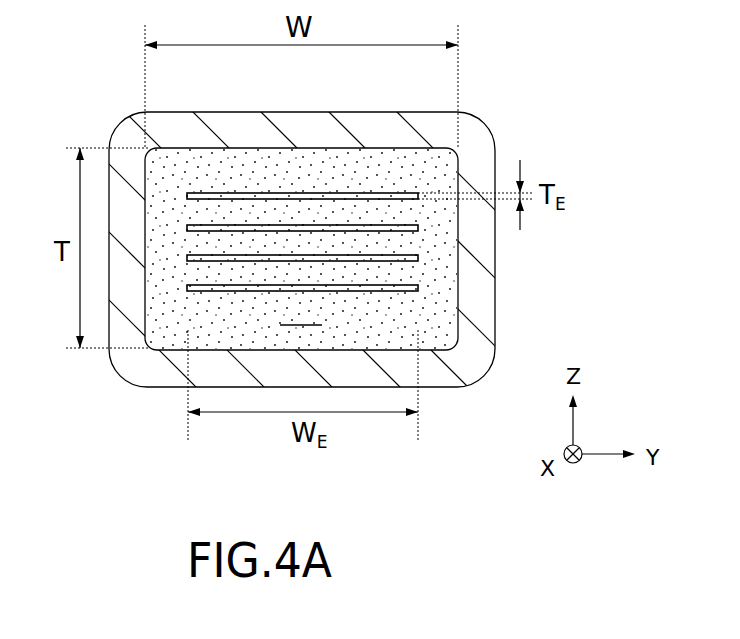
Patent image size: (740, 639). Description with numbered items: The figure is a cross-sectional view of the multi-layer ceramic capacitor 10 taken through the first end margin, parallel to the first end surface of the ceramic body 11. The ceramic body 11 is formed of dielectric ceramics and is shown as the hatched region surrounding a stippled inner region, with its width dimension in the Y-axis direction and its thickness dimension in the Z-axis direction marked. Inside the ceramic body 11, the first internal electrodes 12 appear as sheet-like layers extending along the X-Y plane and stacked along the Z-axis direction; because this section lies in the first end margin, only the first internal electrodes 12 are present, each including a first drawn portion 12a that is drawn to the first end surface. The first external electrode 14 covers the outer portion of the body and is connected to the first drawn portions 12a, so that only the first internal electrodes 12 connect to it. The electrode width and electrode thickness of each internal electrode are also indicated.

The multi-layer ceramic capacitor 10 is at (300, 263).
The ceramic body 11 is at (321, 296).
The first internal electrode 12 is at (302, 180).
The first drawn portion 12a is at (262, 193).
The first external electrode 14 is at (476, 270).